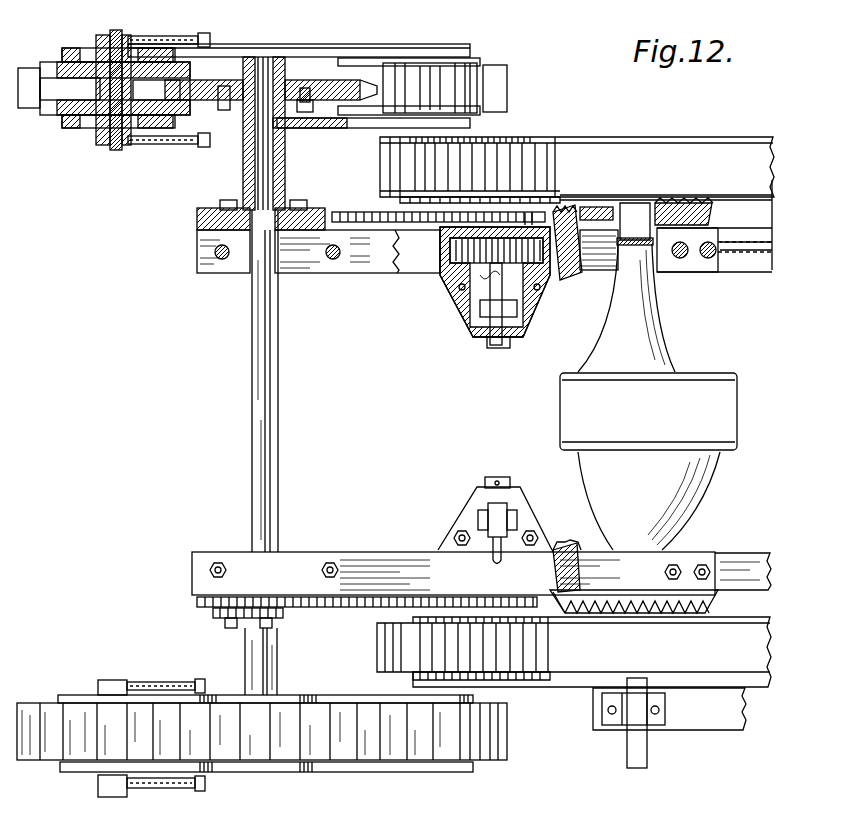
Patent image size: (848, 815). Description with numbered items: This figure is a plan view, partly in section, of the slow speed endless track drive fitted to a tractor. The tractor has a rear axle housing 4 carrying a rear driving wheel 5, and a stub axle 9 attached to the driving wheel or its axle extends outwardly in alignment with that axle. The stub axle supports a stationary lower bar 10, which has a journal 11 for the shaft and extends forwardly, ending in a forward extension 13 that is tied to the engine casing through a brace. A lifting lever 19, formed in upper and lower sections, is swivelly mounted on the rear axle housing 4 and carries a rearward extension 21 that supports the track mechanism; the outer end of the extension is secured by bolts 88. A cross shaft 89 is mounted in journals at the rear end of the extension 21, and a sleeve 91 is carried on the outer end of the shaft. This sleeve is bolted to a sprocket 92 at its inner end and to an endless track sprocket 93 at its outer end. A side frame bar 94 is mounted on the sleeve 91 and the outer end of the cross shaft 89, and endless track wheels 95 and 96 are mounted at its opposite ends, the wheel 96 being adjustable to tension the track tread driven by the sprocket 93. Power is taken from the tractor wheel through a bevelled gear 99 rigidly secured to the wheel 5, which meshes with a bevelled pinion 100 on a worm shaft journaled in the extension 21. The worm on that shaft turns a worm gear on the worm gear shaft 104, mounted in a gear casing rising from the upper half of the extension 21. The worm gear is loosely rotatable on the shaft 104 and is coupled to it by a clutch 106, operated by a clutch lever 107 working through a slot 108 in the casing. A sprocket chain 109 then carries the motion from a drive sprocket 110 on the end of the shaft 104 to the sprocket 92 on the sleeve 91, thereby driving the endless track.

The rear axle housing 4 is at (620, 333).
The rear driving wheel 5 is at (632, 160).
The stub axle 9 is at (648, 754).
The stationary lower bar 10 is at (700, 715).
The journal 11 is at (635, 710).
The forward extension 13 is at (195, 253).
The lifting lever 19 is at (740, 262).
The rearward extension 21 is at (352, 570).
The bolt 88 is at (222, 563).
The cross shaft 89 is at (262, 384).
The sleeve 91 is at (248, 160).
The sprocket 92 is at (316, 215).
The endless track sprocket 93 is at (310, 93).
The side frame bar 94 is at (386, 45).
The endless track wheel 95 is at (480, 62).
The endless track wheel 96 is at (80, 105).
The bevelled gear 99 is at (686, 195).
The bevelled pinion 100 is at (566, 290).
The worm gear shaft 104 is at (532, 197).
The clutch 106 is at (470, 310).
The clutch lever 107 is at (488, 508).
The slot 108 is at (506, 545).
The sprocket chain 109 is at (362, 212).
The drive sprocket 110 is at (522, 150).